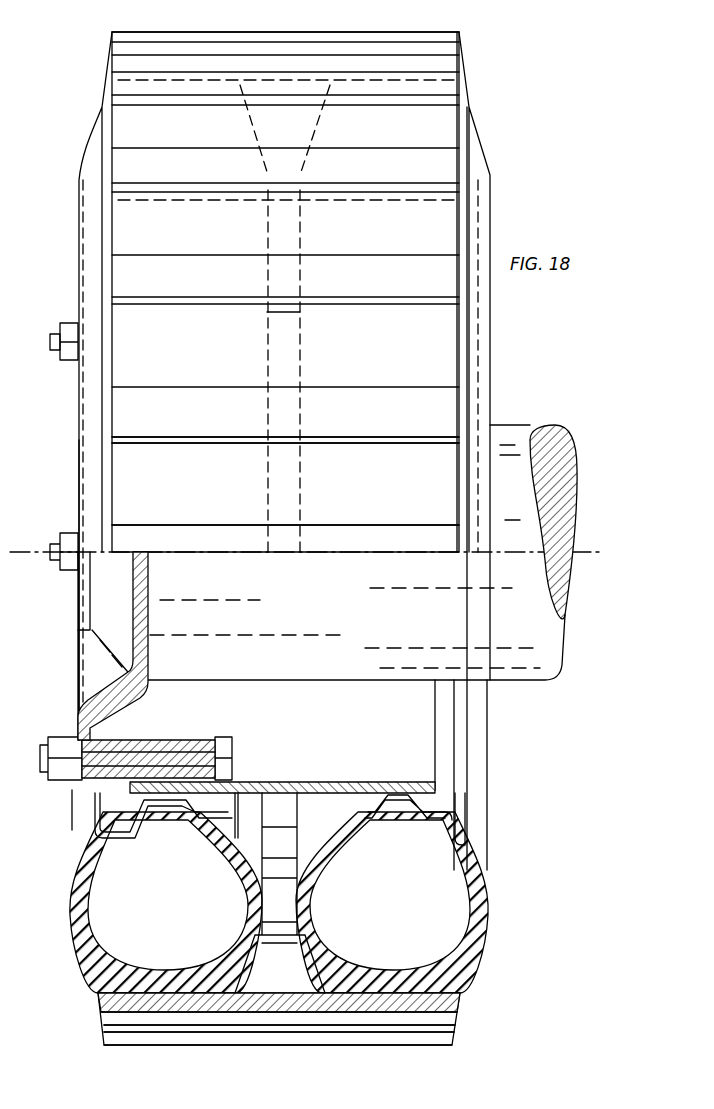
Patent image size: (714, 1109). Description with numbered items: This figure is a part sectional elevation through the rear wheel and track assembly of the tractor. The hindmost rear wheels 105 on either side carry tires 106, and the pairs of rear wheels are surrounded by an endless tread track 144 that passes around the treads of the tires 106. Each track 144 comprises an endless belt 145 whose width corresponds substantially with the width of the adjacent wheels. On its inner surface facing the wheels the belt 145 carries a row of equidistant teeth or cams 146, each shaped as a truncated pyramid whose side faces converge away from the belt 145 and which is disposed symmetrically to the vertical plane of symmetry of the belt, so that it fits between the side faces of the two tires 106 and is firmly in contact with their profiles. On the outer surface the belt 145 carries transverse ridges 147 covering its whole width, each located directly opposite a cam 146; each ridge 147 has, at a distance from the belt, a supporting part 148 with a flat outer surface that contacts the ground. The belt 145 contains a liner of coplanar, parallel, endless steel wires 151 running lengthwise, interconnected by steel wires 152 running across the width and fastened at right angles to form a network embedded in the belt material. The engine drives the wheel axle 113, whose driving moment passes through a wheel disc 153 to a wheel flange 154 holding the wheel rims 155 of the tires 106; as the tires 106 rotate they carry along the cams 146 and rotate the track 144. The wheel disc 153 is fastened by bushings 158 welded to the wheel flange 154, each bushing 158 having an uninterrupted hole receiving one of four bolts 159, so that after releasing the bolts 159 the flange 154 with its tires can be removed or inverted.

The hindmost rear wheel 105 is at (62, 489).
The tire 106 is at (78, 185).
The wheel axle 113 is at (575, 500).
The endless tread track 144 is at (405, 26).
The endless belt 145 is at (455, 352).
The tooth or cam 146 is at (300, 945).
The transverse ridge 147 is at (192, 23).
The supporting part 148 is at (455, 398).
The steel wire 151 is at (180, 1012).
The steel wire 152 is at (100, 1025).
The wheel disc 153 is at (148, 612).
The wheel flange 154 is at (430, 787).
The wheel rim 155 is at (100, 800).
The bushing 158 is at (170, 740).
The bolt 159 is at (68, 362).